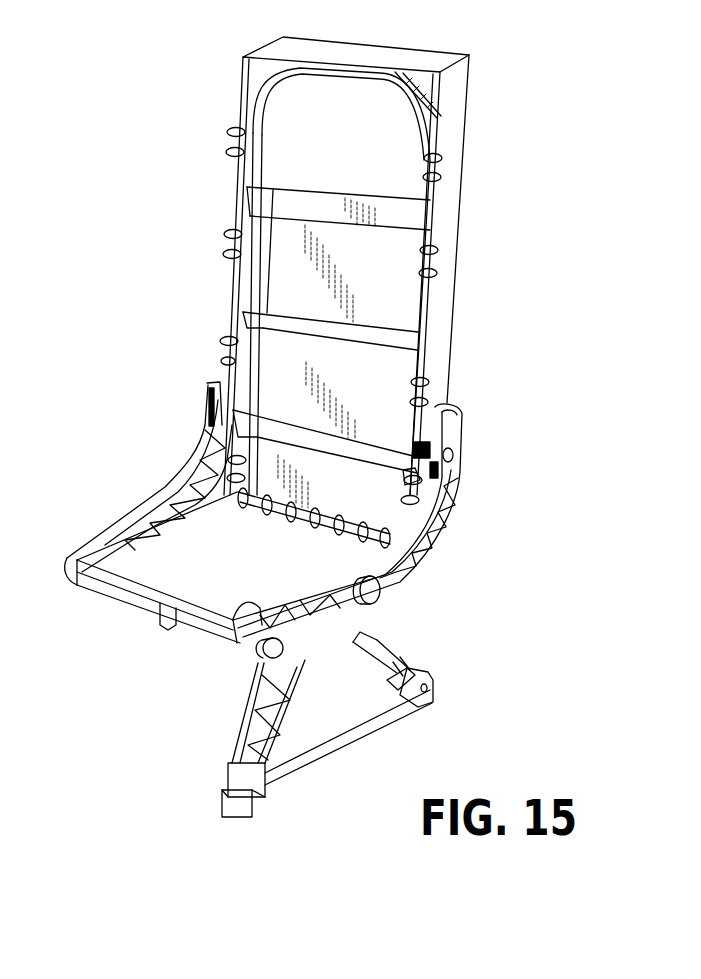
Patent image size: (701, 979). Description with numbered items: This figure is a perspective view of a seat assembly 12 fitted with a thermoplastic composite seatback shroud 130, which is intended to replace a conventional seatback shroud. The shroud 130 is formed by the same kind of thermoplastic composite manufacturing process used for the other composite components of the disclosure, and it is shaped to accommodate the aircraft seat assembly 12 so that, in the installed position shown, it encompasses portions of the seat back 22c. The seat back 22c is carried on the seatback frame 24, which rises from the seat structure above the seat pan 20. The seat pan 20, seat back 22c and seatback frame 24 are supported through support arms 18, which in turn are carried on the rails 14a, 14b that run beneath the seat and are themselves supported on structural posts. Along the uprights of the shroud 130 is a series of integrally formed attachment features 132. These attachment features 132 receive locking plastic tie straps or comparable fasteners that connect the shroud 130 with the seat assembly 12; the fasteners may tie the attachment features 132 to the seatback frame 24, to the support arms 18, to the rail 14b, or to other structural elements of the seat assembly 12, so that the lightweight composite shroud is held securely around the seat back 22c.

The seat assembly 12 is at (158, 78).
The thermoplastic composite seatback shroud 130 is at (410, 57).
The seatback frame 24 is at (313, 67).
The seat back 22c is at (314, 285).
The attachment features 132 is at (230, 260).
The seat pan 20 is at (190, 558).
The support arm 18 is at (420, 557).
The rail 14a is at (262, 646).
The rail 14b is at (373, 595).